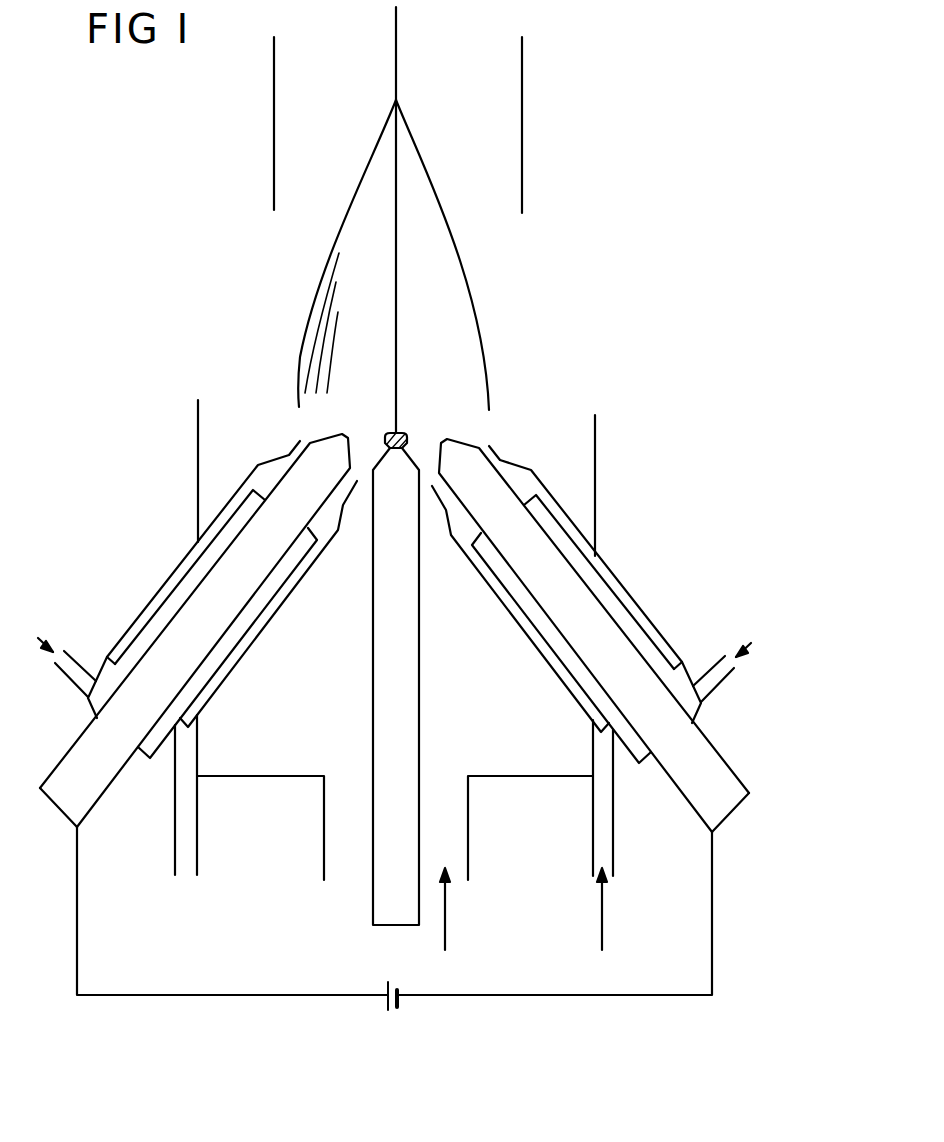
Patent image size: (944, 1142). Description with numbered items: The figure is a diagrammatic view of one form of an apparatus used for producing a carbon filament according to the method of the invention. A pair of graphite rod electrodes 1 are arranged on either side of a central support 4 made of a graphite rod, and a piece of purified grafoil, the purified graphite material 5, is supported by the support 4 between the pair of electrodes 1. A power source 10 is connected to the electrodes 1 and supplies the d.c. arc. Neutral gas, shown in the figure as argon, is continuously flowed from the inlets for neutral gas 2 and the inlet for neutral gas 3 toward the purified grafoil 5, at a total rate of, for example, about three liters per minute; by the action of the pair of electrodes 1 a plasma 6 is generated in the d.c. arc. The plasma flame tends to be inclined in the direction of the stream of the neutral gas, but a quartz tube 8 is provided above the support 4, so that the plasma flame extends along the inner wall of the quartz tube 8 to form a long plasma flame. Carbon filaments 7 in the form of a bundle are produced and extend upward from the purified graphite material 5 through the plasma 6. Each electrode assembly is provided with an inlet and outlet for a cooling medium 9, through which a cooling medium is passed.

The electrodes 1 is at (62, 806).
The inlets for neutral gas 2 is at (175, 862).
The inlet for neutral gas 3 is at (457, 870).
The support 4 is at (378, 908).
The purified graphite material 5 is at (398, 436).
The plasma 6 is at (430, 185).
The carbon filaments 7 is at (404, 43).
The quartz tube 8 is at (524, 84).
The inlet and outlet for a cooling medium 9 is at (70, 677).
The power source 10 is at (395, 1013).